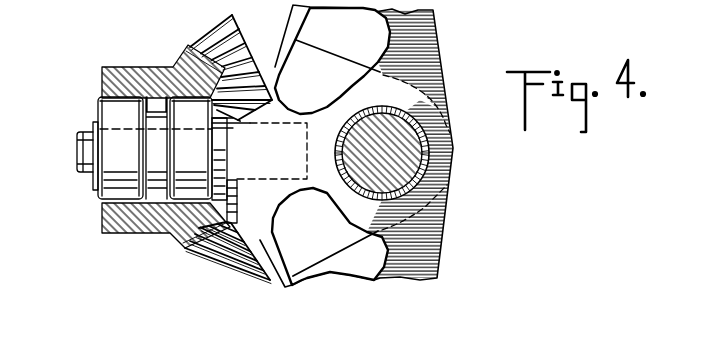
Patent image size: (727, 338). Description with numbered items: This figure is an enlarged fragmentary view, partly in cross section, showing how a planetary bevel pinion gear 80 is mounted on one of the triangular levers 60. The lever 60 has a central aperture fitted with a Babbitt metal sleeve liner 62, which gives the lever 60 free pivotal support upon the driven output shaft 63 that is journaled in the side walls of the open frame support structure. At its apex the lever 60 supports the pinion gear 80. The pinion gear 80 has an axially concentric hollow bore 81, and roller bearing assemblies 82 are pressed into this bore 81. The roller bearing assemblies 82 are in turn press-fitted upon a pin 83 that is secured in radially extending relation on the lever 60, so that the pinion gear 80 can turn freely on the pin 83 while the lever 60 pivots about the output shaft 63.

The lever 60 is at (427, 250).
The Babbitt metal sleeve liner 62 is at (428, 170).
The driven output shaft 63 is at (400, 135).
The planetary bevel pinion gear 80 is at (118, 222).
The hollow bore 81 is at (157, 102).
The roller bearing assemblies 82 is at (100, 200).
The pin 83 is at (87, 145).